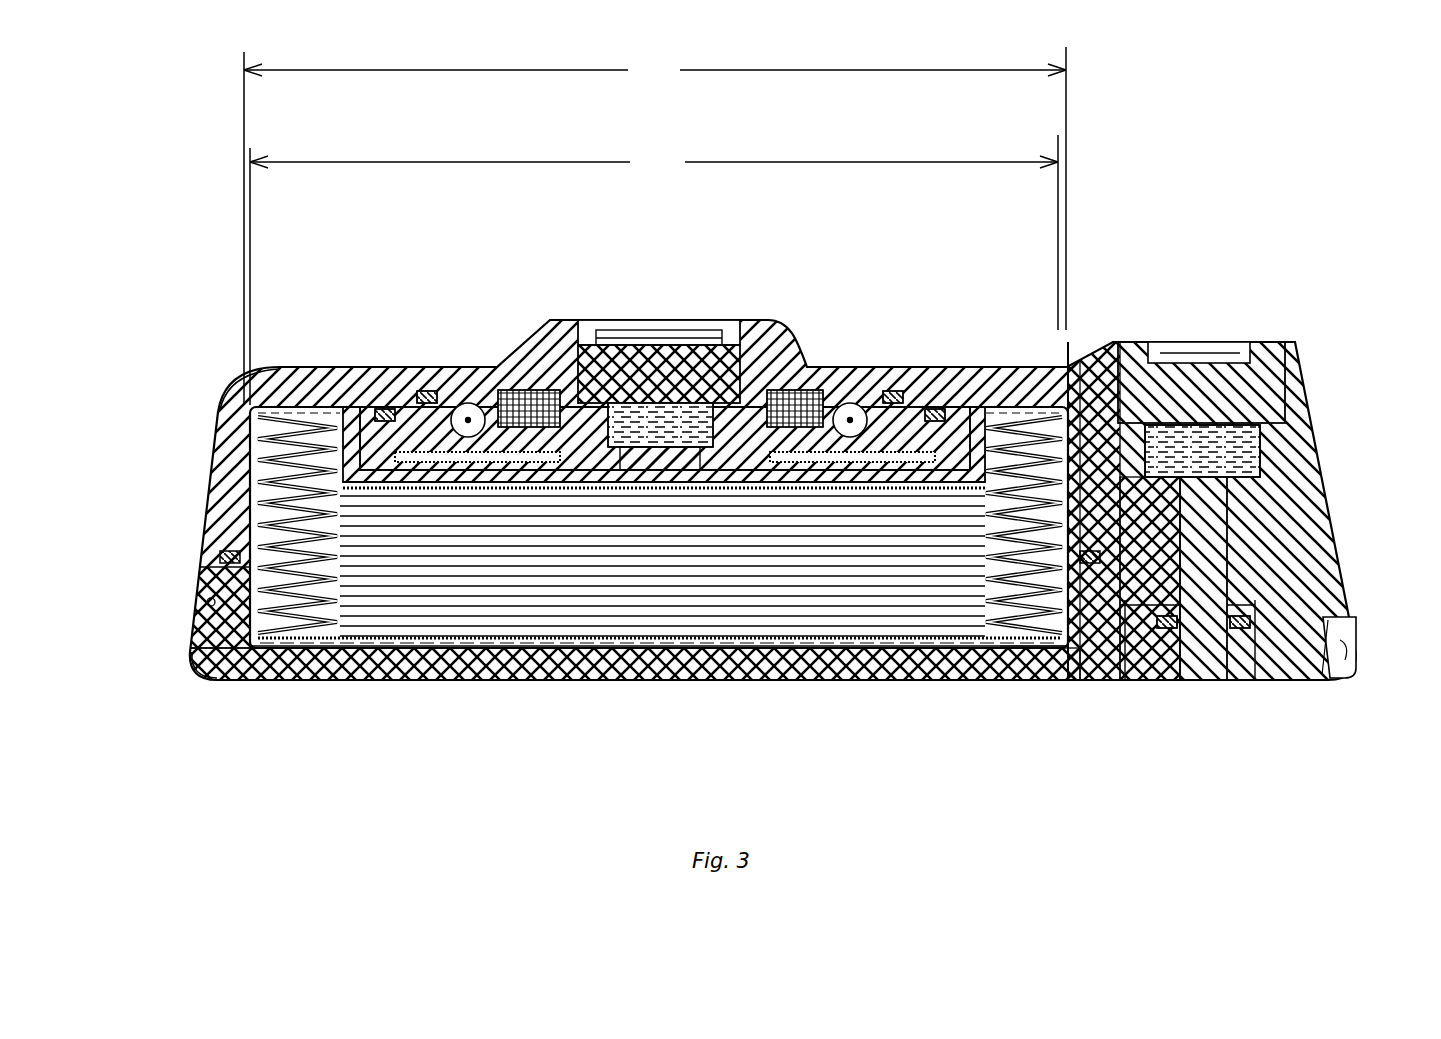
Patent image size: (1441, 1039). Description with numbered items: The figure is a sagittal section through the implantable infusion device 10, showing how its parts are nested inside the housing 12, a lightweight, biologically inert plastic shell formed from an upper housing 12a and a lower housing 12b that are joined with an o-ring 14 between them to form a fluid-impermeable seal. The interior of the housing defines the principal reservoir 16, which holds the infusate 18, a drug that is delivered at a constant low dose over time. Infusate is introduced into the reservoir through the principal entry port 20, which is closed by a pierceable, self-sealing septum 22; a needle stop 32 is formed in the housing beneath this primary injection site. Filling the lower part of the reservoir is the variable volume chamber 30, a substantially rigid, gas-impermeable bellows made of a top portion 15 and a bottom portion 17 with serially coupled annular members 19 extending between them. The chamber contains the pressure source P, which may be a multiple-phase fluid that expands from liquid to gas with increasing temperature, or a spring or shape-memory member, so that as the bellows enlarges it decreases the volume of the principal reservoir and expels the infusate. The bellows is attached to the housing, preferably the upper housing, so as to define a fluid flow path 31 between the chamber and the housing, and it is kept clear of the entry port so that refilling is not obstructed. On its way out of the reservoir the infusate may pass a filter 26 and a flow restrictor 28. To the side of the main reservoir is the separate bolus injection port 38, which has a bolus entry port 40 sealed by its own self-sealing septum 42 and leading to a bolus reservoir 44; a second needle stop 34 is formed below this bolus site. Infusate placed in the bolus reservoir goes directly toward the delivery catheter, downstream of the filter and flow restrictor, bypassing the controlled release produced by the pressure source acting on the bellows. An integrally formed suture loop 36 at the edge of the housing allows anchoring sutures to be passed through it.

The device 10 is at (762, 393).
The housing 12 is at (205, 490).
The upper housing 12a is at (228, 403).
The lower housing 12b is at (206, 622).
The o-ring 14 is at (220, 560).
The top portion 15 is at (352, 400).
The principal reservoir 16 is at (912, 650).
The bottom portion 17 is at (238, 505).
The infusate 18 is at (1022, 648).
The annular members 19 is at (275, 442).
The principal entry port 20 is at (600, 335).
The septum 22 is at (720, 345).
The filter 26 is at (425, 392).
The flow restrictor 28 is at (530, 400).
The variable volume enclosed chamber 30 is at (400, 640).
The fluid flow path 31 is at (478, 412).
The needle stop 32 is at (640, 420).
The needle stop 34 is at (1228, 470).
The suture loop 36 is at (1352, 633).
The bolus injection port 38 is at (1265, 327).
The bolus entry port 40 is at (1160, 345).
The septum 42 is at (1200, 375).
The bolus reservoir 44 is at (1262, 440).
The pressure source P is at (678, 598).